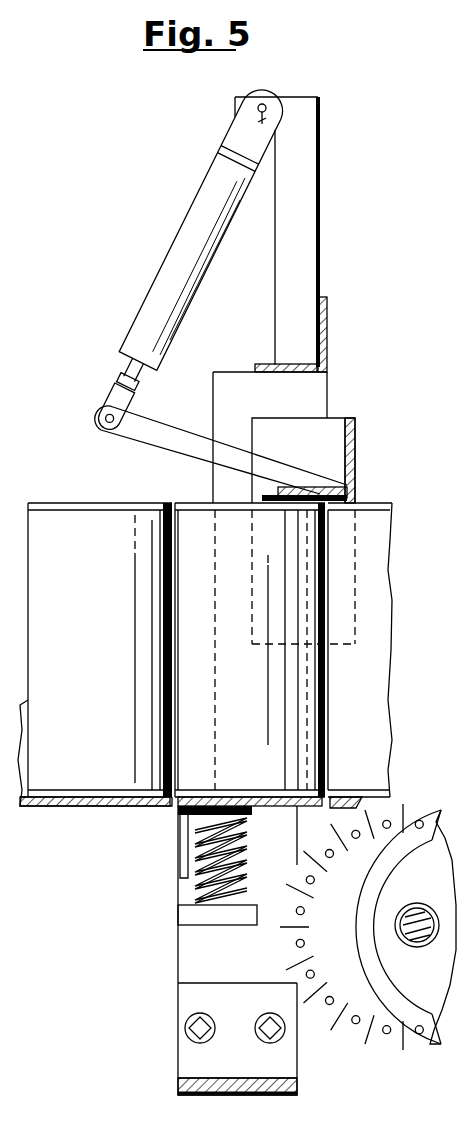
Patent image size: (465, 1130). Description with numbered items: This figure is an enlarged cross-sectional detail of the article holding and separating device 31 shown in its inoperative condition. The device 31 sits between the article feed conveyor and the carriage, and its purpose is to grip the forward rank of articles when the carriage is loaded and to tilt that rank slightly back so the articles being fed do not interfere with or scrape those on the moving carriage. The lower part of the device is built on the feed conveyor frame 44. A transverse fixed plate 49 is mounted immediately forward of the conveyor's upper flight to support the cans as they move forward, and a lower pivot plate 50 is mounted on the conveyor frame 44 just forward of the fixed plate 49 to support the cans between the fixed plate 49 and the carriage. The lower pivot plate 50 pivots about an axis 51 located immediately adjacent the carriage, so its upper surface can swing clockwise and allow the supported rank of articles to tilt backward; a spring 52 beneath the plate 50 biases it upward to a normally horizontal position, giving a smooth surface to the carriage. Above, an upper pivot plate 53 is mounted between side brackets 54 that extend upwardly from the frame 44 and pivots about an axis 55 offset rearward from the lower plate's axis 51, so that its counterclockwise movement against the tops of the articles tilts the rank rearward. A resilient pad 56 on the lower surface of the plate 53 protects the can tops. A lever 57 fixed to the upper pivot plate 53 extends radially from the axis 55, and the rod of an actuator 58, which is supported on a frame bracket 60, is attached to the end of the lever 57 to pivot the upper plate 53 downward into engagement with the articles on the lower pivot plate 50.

The article holding and separating device 31 is at (352, 324).
The feed conveyor frame 44 is at (187, 963).
The transverse fixed plate 49 is at (346, 797).
The lower pivot plate 50 is at (232, 800).
The axis 51 is at (193, 818).
The spring 52 is at (250, 846).
The upper pivot plate 53 is at (352, 492).
The side brackets 54 is at (337, 427).
The axis 55 is at (348, 481).
The resilient pad 56 is at (262, 495).
The lever 57 is at (151, 421).
The actuator 58 is at (200, 272).
The frame bracket 60 is at (308, 234).